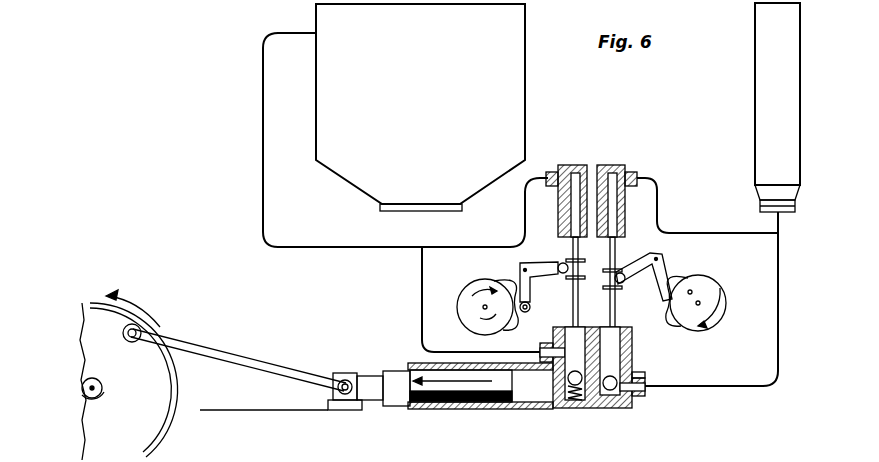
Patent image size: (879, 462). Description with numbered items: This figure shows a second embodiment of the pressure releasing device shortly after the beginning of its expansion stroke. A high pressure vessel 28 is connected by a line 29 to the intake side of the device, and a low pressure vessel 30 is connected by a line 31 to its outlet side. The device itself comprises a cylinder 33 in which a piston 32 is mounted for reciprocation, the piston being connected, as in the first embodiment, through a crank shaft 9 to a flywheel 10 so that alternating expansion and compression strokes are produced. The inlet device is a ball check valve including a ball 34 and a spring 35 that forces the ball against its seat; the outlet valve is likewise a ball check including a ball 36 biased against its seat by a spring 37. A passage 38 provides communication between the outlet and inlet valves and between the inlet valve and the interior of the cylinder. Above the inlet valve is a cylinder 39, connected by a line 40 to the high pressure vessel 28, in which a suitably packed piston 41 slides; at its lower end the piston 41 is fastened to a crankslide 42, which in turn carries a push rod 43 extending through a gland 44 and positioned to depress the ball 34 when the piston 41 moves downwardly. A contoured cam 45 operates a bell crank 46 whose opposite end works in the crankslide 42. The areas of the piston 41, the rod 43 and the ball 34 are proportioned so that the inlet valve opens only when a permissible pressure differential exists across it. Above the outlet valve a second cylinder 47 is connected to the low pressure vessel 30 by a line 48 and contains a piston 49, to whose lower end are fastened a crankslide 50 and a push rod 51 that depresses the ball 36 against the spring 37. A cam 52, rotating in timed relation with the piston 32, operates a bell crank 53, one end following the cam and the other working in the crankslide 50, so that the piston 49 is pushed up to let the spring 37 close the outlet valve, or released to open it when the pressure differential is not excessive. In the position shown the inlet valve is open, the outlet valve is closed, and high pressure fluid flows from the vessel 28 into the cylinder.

The crank shaft 9 is at (104, 386).
The flywheel 10 is at (178, 390).
The high pressure vessel 28 is at (800, 97).
The line 29 is at (778, 300).
The low pressure vessel 30 is at (316, 97).
The line 31 is at (422, 318).
The piston 32 is at (410, 364).
The cylinder 33 is at (506, 408).
The ball 34 is at (634, 372).
The spring 35 is at (632, 402).
The ball 36 is at (556, 398).
The spring 37 is at (572, 400).
The passage 38 is at (598, 395).
The cylinder 39 is at (614, 165).
The line 40 is at (692, 233).
The piston 41 is at (616, 250).
The crankslide 42 is at (578, 286).
The push rod 43 is at (620, 305).
The gland 44 is at (628, 326).
The cam 45 is at (712, 282).
The bell crank 46 is at (667, 262).
The second cylinder 47 is at (565, 165).
The line 48 is at (498, 247).
The piston 49 is at (573, 250).
The crankslide 50 is at (570, 270).
The push rod 51 is at (530, 307).
The cam 52 is at (468, 298).
The bell crank 53 is at (520, 268).